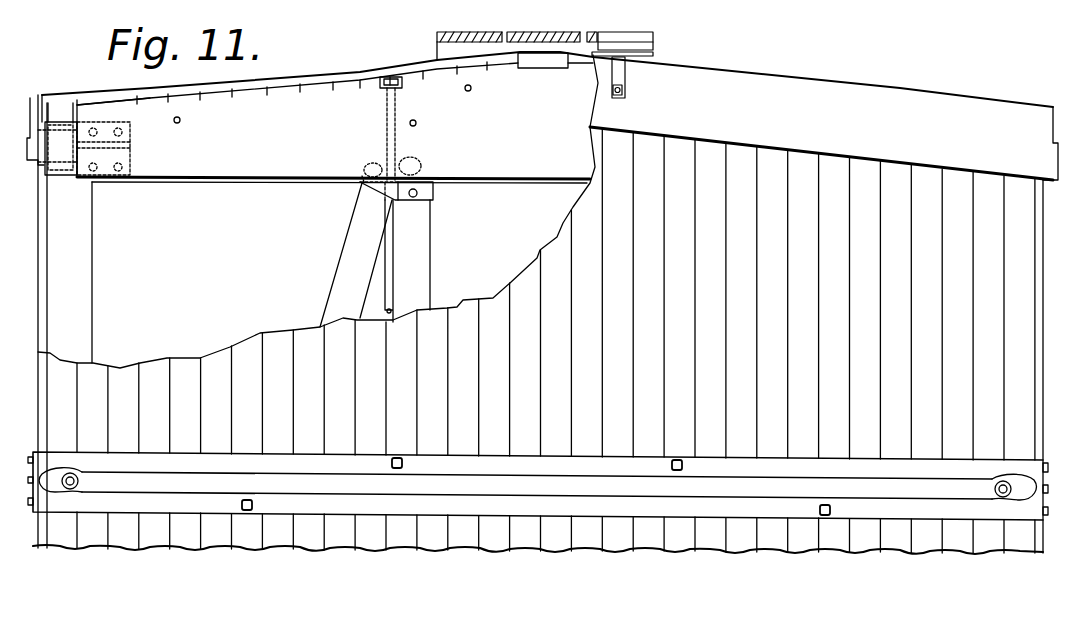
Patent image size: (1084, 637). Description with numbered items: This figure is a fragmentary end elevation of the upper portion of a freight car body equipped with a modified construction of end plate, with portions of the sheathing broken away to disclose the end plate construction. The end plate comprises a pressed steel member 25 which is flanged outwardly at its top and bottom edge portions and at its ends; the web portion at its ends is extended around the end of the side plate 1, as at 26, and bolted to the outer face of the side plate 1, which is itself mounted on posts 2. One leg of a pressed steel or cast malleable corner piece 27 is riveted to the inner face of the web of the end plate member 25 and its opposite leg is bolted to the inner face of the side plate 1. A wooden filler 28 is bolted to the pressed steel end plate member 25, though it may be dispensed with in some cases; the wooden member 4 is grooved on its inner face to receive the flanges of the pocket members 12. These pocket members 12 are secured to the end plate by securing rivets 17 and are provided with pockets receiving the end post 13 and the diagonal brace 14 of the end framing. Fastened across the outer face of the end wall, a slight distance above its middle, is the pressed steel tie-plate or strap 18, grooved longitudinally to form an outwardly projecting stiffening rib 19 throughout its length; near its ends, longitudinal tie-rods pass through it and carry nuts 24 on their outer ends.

The side plate 1 is at (62, 115).
The post 2 is at (76, 272).
The wooden member 4 is at (62, 487).
The pocket member 12 is at (423, 197).
The end post 13 is at (413, 272).
The diagonal brace 14 is at (345, 285).
The securing rivet 17 is at (383, 167).
The tie-plate or strap 18 is at (505, 467).
The stiffening rib 19 is at (602, 485).
The nut 24 is at (1003, 497).
The pressed steel end plate member 25 is at (78, 115).
The extended web portion 26 is at (60, 146).
The corner piece 27 is at (129, 157).
The wooden filler 28 is at (548, 205).